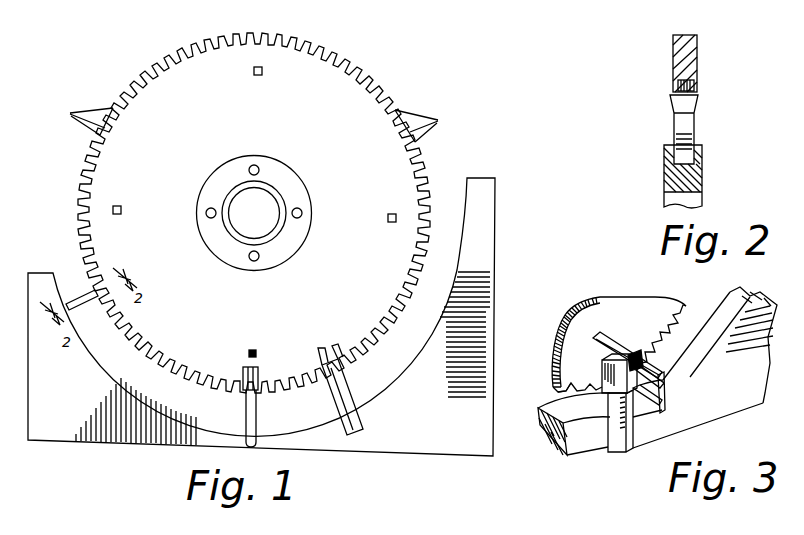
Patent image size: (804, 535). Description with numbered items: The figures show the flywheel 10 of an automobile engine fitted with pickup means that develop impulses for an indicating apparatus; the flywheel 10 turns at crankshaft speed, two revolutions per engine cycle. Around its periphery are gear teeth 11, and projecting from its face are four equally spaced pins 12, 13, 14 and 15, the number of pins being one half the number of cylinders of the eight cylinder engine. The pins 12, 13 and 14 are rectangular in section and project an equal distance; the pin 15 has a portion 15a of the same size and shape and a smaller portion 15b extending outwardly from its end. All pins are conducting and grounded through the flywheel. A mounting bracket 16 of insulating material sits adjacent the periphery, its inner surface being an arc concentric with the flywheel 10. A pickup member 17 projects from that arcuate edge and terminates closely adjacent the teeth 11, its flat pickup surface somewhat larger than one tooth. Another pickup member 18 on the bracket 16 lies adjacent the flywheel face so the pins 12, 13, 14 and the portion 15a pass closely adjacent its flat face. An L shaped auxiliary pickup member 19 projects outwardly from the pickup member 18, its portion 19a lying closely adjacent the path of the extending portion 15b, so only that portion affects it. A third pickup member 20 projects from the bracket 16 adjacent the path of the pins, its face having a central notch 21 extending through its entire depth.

In FIG. 1, the flywheel 10 is at (107, 178).
In FIG. 2, the flywheel 10 is at (685, 55).
In FIG. 3, the flywheel 10 is at (622, 304).
In FIG. 1, the gear teeth 11 is at (257, 121).
In FIG. 2, the gear teeth 11 is at (678, 85).
In FIG. 3, the gear teeth 11 is at (560, 390).
In FIG. 1, the pin 12 is at (122, 208).
In FIG. 1, the pin 13 is at (262, 73).
In FIG. 1, the pin 14 is at (388, 217).
In FIG. 1, the pin 15 is at (243, 355).
In FIG. 3, the pin 15 is at (635, 347).
In FIG. 1, the pin portion 15a is at (252, 349).
In FIG. 3, the pin portion 15a is at (602, 352).
In FIG. 1, the extending pin portion 15b is at (257, 353).
In FIG. 3, the extending pin portion 15b is at (666, 378).
In FIG. 1, the mounting bracket 16 is at (480, 246).
In FIG. 2, the mounting bracket 16 is at (672, 175).
In FIG. 3, the mounting bracket 16 is at (580, 440).
In FIG. 1, the pickup member 17 is at (74, 300).
In FIG. 2, the pickup member 17 is at (697, 125).
In FIG. 1, the pickup member 18 is at (246, 403).
In FIG. 3, the pickup member 18 is at (615, 447).
In FIG. 1, the auxiliary pickup member 19 is at (258, 377).
In FIG. 3, the auxiliary pickup member 19 is at (660, 422).
In FIG. 3, the portion of auxiliary pickup member 19a is at (663, 378).
In FIG. 1, the third pickup member 20 is at (346, 393).
In FIG. 1, the notch 21 is at (330, 350).